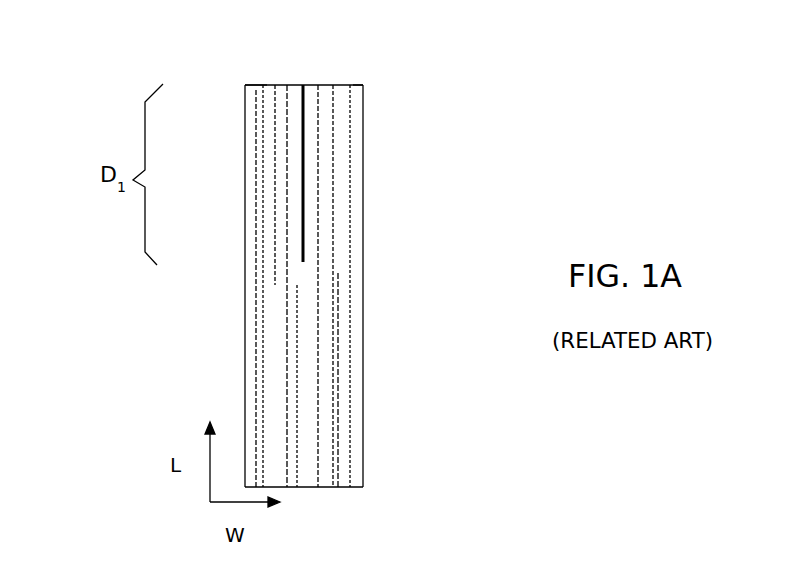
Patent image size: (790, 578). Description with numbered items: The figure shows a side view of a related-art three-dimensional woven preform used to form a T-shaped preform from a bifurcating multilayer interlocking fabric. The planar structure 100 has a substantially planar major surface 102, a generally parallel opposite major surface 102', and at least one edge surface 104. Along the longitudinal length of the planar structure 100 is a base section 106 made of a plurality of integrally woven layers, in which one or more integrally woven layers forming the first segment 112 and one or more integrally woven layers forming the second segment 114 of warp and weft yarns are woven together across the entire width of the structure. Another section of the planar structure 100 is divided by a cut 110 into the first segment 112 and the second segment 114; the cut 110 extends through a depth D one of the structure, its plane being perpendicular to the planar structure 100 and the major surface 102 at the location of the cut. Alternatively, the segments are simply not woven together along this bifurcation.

The planar structure 100 is at (168, 338).
The major surface 102 is at (202, 286).
The opposite major surface 102' is at (406, 286).
The edge surface 104 is at (363, 482).
The base section 106 is at (393, 265).
The cut 110 is at (303, 85).
The first segment 112 is at (353, 85).
The second segment 114 is at (267, 85).